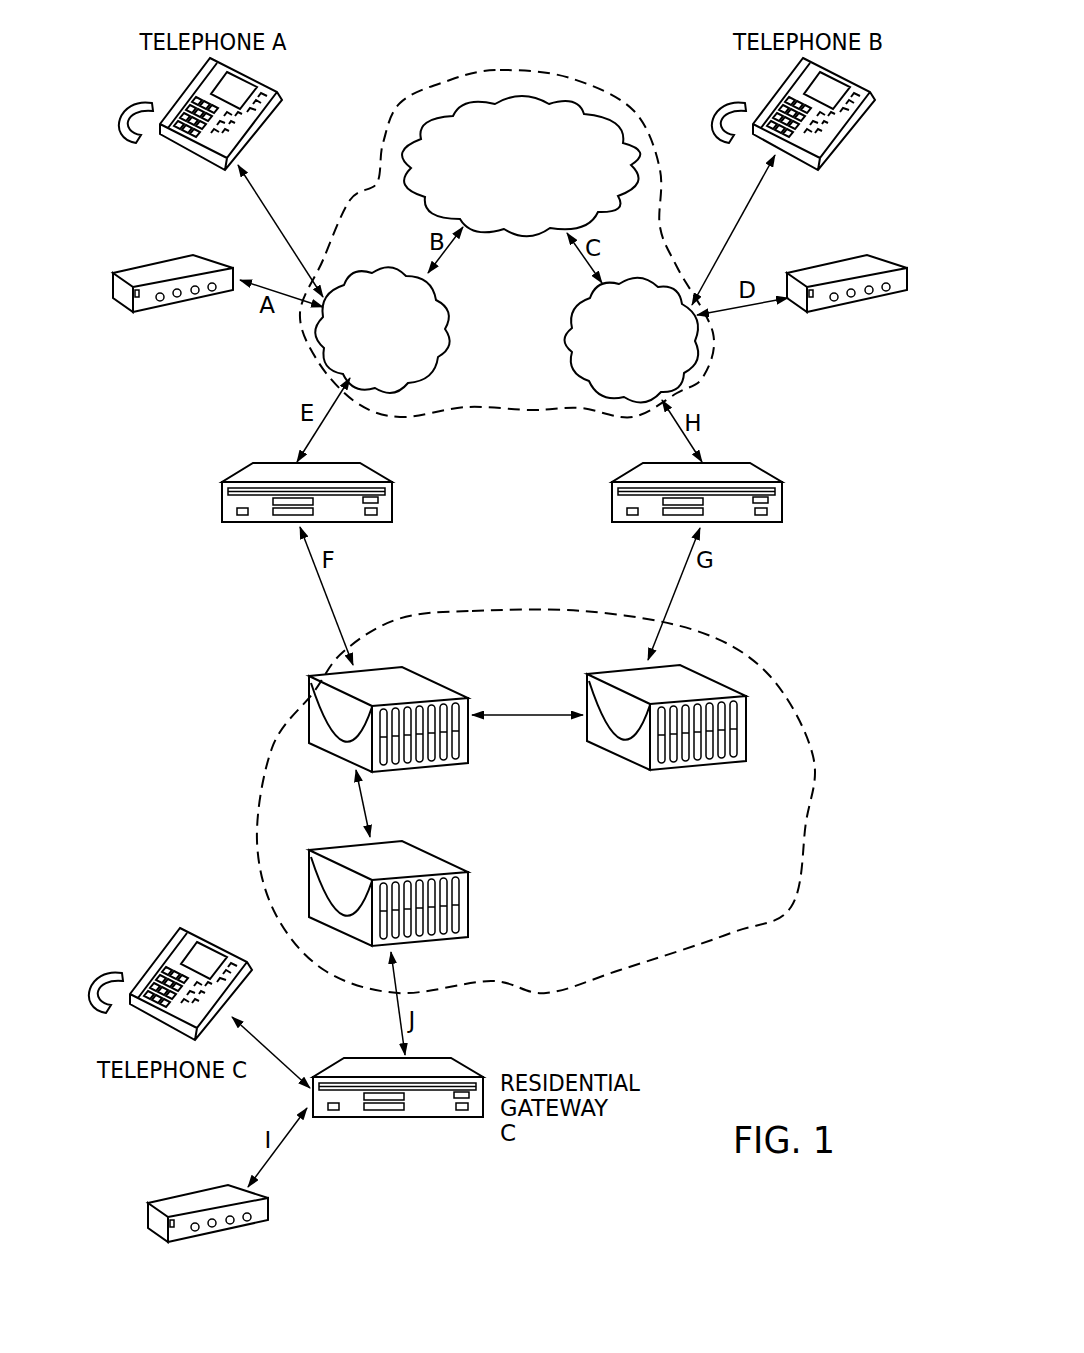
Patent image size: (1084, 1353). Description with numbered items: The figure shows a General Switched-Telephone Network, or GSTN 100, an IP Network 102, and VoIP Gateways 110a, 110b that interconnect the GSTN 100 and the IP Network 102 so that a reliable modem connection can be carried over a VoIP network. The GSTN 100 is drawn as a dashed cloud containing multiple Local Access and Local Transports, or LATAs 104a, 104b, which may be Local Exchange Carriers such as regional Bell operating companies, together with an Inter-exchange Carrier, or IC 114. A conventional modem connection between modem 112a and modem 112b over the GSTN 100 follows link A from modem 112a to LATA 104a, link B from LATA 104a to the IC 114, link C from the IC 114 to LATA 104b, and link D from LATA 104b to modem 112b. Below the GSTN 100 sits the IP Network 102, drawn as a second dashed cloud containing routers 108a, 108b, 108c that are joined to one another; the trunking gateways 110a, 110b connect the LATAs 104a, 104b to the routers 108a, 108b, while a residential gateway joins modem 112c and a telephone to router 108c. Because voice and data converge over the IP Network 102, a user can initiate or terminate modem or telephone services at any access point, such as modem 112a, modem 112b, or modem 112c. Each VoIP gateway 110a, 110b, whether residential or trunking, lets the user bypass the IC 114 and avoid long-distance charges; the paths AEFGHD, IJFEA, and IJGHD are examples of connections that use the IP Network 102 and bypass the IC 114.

The General Switched-Telephone Network (GSTN) 100 is at (498, 303).
The IP Network 102 is at (618, 895).
The Local Access and Local Transport (LATA) 104a is at (447, 338).
The Local Access and Local Transport (LATA) 104b is at (572, 353).
The router 108a is at (431, 676).
The router 108b is at (616, 755).
The router 108c is at (431, 851).
The VoIP Gateway 110a is at (250, 463).
The VoIP Gateway 110b is at (622, 476).
The modem 112a is at (168, 313).
The modem 112b is at (842, 313).
The modem 112c is at (203, 1243).
The Inter-exchange Carrier (IC) 114 is at (430, 212).